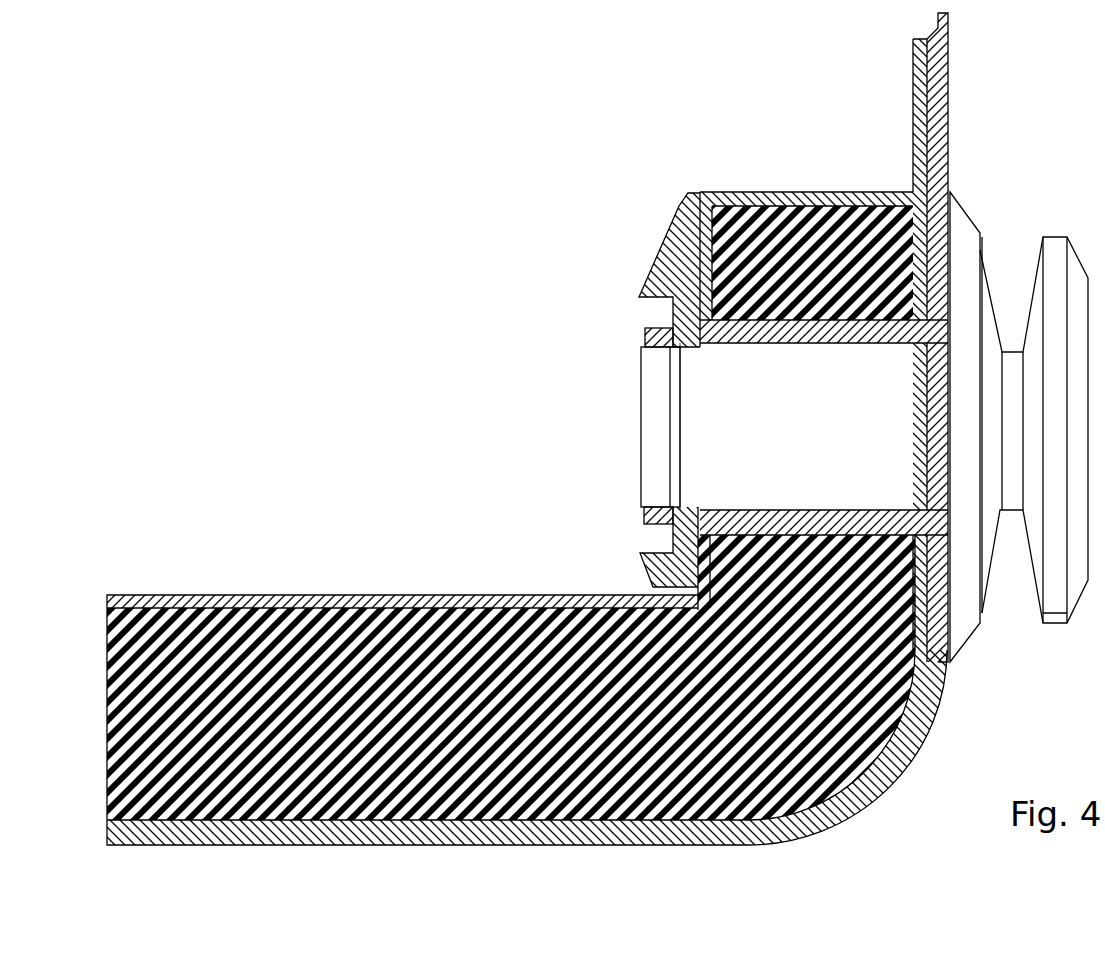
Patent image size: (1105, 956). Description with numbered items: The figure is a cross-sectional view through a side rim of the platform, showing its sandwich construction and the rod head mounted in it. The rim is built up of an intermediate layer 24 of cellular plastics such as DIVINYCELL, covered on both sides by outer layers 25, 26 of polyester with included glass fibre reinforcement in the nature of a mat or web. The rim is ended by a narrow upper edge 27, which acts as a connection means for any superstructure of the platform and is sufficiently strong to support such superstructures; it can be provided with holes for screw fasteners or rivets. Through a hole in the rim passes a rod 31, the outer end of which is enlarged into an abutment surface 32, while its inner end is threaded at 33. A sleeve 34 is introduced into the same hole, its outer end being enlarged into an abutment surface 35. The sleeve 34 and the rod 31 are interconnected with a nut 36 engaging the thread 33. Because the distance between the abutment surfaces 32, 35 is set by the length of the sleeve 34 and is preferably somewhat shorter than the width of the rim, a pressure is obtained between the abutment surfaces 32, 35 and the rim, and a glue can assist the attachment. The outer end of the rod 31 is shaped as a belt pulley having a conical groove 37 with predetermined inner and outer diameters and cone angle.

The intermediate layer 24 is at (335, 643).
The outer layer 25 is at (404, 594).
The outer layer 26 is at (467, 836).
The upper edge 27 is at (949, 71).
The rod 31 is at (807, 380).
The abutment surface 32 is at (948, 237).
The thread 33 is at (657, 328).
The sleeve 34 is at (760, 327).
The abutment surface 35 is at (691, 212).
The nut 36 is at (645, 337).
The conical groove 37 is at (1007, 272).